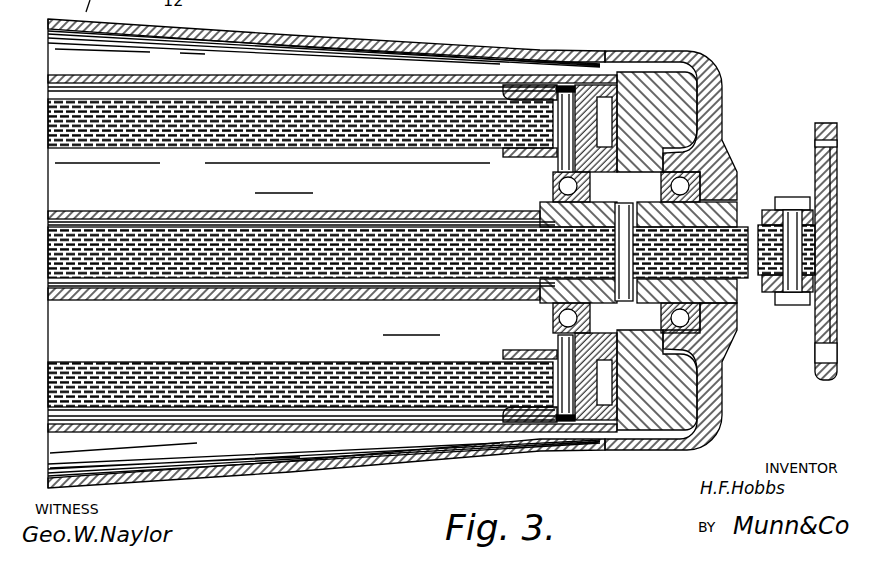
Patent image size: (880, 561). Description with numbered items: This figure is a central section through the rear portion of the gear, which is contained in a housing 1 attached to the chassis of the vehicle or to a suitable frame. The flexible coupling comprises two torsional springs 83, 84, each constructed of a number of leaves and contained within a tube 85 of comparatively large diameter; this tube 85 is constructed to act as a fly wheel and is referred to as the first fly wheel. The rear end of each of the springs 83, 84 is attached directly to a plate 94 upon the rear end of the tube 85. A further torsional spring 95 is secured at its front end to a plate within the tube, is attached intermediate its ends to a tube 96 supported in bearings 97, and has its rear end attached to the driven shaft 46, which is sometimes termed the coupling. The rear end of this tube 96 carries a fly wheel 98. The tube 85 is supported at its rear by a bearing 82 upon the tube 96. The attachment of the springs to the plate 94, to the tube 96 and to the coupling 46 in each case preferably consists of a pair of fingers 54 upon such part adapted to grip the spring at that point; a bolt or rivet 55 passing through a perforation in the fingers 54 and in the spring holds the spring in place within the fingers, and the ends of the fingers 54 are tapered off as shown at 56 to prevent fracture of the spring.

The housing 1 is at (470, 47).
The driven shaft 46 is at (815, 165).
The fingers 54 is at (766, 210).
The bolt or rivet 55 is at (563, 92).
The tapered ends 56 is at (500, 85).
The bearing 82 is at (550, 170).
The torsional spring 83 is at (400, 148).
The torsional spring 84 is at (430, 387).
The tube 85 is at (278, 75).
The plate 94 is at (606, 76).
The torsional spring 95 is at (341, 210).
The tube 96 is at (232, 290).
The bearings 97 is at (723, 136).
The fly wheel 98 is at (705, 98).